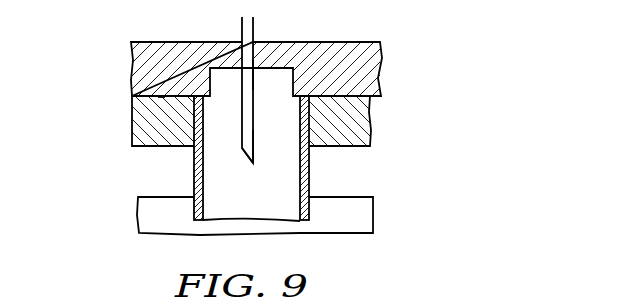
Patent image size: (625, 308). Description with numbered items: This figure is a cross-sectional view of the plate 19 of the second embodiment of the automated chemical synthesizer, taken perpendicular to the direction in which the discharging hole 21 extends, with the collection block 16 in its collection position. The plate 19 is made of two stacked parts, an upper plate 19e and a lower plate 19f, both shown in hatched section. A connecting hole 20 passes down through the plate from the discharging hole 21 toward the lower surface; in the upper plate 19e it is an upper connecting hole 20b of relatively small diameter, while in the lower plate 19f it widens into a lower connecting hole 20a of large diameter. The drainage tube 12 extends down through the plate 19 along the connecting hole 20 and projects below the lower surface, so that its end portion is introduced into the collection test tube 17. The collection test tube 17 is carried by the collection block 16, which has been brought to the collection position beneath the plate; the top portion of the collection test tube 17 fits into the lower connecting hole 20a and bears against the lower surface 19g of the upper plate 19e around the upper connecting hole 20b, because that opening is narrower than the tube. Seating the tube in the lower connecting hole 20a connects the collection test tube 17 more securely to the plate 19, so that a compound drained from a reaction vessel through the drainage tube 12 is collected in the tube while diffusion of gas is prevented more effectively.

The drainage tube 12 is at (242, 123).
The collection block 16 is at (352, 197).
The collection test tube 17 is at (194, 175).
The plate 19 is at (287, 90).
The upper plate 19e is at (384, 68).
The lower plate 19f is at (372, 120).
The lower surface of the upper plate 19g is at (158, 97).
The connecting hole 20 is at (259, 104).
The lower connecting hole 20a is at (310, 115).
The upper connecting hole 20b is at (289, 78).
The discharging hole 21 is at (247, 90).